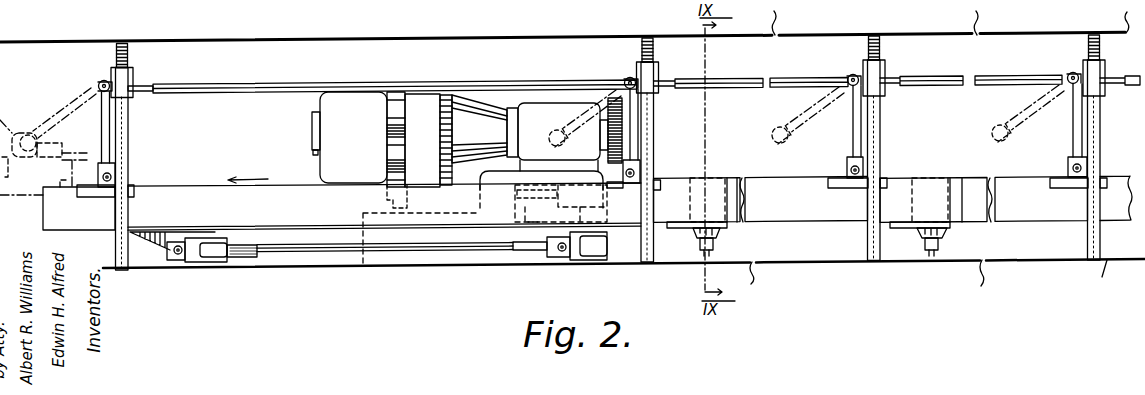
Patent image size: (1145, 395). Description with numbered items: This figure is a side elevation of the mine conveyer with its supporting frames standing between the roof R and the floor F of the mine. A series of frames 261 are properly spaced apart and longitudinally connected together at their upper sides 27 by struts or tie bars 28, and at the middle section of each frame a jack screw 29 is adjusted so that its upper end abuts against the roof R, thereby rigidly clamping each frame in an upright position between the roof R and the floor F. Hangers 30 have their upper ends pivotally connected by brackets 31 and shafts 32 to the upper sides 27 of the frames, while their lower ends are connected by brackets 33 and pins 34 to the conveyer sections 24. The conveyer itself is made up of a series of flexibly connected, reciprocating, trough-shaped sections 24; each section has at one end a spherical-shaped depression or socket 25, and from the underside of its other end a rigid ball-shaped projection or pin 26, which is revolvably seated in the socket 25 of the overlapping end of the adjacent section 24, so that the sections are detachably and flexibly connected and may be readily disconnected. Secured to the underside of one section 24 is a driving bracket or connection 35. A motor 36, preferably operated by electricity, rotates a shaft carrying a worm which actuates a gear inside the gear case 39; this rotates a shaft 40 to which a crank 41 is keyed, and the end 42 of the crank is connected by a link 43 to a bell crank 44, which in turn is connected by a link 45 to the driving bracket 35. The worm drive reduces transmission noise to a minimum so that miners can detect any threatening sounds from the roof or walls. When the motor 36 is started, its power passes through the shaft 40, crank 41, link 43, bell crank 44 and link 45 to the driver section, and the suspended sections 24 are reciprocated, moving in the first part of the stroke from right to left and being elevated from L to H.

The roof R is at (563, 35).
The floor F is at (348, 263).
The elevated position H is at (43, 154).
The lower position L is at (73, 200).
The conveyer section 24 is at (295, 194).
The spherical-shaped depression or socket 25 is at (722, 238).
The ball-shaped projection or pin 26 is at (712, 250).
The upper side 27 is at (700, 245).
The strut or tie bar 28 is at (283, 90).
The jack screw 29 is at (117, 57).
The hanger 30 is at (103, 129).
The bracket 31 is at (98, 85).
The shaft 32 is at (1072, 72).
The bracket 33 is at (656, 181).
The pin 34 is at (640, 170).
The driving bracket or connection 35 is at (163, 252).
The motor 36 is at (333, 121).
The gear case 39 is at (518, 106).
The shaft 40 is at (523, 169).
The crank 41 is at (515, 195).
The end of crank 42 is at (517, 215).
The link 43 is at (608, 212).
The bell crank 44 is at (608, 242).
The link 45 is at (433, 248).
The frame 261 is at (128, 80).